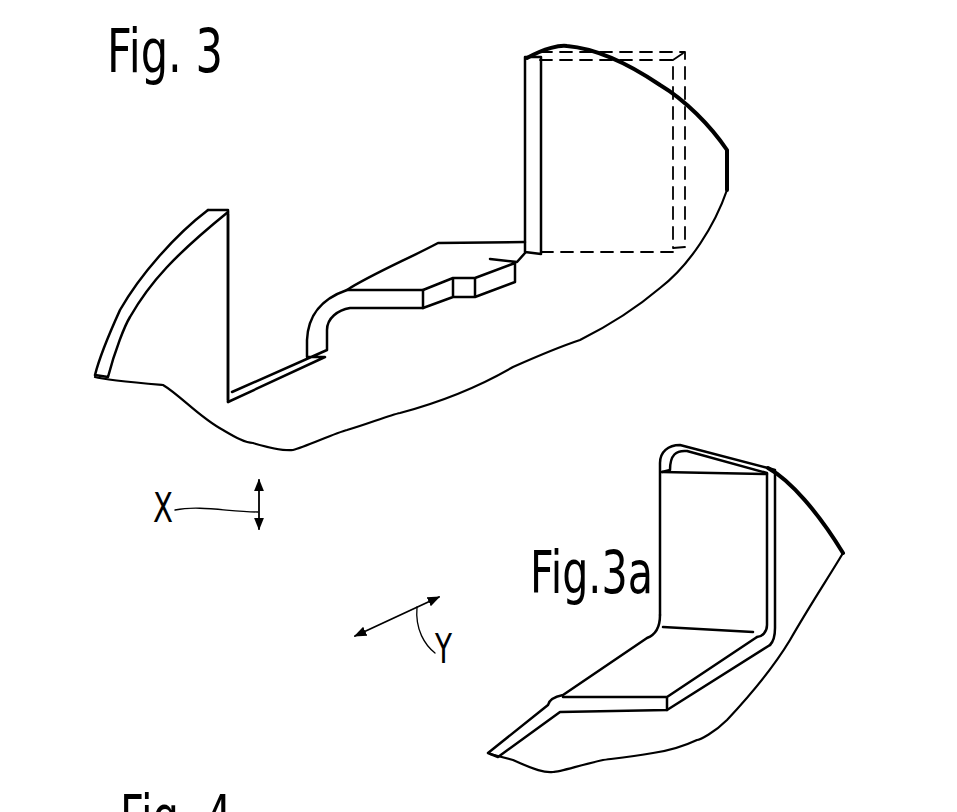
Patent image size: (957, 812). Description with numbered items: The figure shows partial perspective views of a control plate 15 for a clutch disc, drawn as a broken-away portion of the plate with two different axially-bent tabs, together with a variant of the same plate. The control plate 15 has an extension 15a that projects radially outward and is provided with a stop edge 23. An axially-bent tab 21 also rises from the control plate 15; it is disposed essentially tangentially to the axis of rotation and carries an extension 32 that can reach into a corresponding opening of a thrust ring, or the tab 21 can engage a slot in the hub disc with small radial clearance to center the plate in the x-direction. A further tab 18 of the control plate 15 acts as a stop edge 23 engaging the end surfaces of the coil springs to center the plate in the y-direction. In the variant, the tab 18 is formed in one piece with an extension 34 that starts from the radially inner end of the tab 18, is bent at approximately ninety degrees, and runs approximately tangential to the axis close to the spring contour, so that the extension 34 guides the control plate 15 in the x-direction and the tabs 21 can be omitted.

In FIG. 3, the control plate 15 is at (513, 357).
In FIG. 3A, the control plate 15 is at (722, 707).
In FIG. 3, the extension 15a is at (178, 292).
In FIG. 3, the tab 18 is at (690, 45).
In FIG. 3A, the tab 18 is at (783, 503).
In FIG. 3, the axially-bent tab 21 is at (425, 270).
In FIG. 3A, the stop edge 23 is at (673, 513).
In FIG. 3, the extension 32 is at (478, 267).
In FIG. 3A, the extension 34 is at (630, 673).